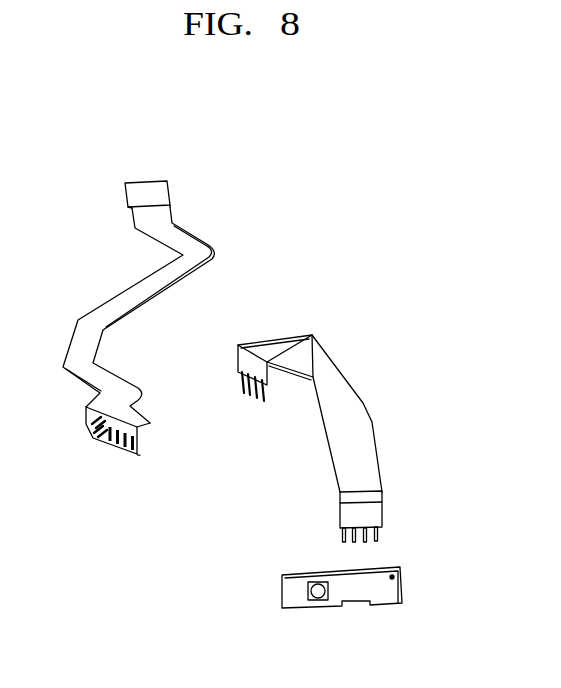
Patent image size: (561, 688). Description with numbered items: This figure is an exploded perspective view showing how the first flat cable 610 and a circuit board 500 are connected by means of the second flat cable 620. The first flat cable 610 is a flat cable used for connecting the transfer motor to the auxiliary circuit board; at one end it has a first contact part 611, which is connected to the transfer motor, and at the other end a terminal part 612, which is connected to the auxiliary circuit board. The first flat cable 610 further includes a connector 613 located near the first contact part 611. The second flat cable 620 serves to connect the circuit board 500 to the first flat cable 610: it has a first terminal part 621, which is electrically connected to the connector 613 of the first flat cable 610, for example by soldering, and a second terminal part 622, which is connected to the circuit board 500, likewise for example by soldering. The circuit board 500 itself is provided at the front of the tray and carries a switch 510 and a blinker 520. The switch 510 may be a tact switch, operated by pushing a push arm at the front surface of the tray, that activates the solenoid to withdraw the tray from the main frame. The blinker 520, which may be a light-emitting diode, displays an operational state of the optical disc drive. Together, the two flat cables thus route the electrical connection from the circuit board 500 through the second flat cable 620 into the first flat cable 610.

The circuit board 500 is at (408, 575).
The switch 510 is at (318, 601).
The blinker 520 is at (393, 581).
The first flat cable 610 is at (115, 305).
The first contact part 611 is at (93, 431).
The terminal part 612 is at (147, 188).
The connector 613 is at (120, 448).
The second flat cable 620 is at (342, 390).
The first terminal part 621 is at (245, 390).
The second terminal part 622 is at (380, 535).